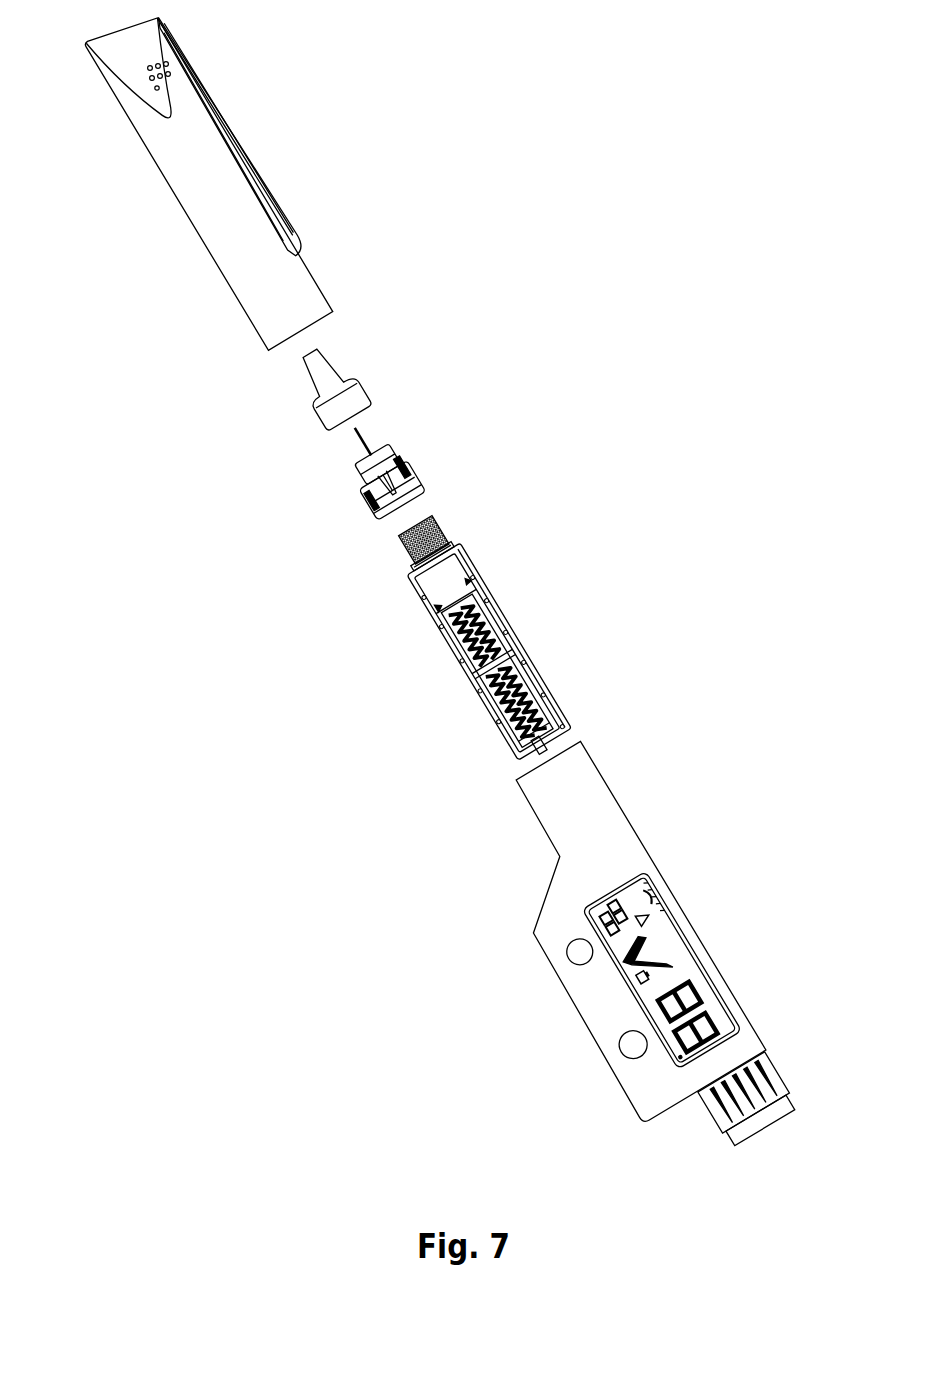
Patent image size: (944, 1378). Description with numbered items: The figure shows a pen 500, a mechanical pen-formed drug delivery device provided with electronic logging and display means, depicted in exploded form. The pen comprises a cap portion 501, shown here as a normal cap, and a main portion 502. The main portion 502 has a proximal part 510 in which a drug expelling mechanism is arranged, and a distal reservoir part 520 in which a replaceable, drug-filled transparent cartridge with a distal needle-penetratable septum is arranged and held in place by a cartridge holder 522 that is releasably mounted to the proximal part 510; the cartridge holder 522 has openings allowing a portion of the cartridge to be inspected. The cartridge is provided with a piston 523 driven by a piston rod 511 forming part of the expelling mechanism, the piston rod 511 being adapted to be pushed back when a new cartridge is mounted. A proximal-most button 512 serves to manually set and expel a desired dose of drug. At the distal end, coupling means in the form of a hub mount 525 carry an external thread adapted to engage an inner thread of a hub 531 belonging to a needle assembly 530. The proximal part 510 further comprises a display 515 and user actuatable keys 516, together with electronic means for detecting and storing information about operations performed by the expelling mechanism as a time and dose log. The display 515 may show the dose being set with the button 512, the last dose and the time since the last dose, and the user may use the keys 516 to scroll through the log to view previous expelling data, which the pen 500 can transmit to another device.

The pen 500 is at (683, 215).
The cap portion 501 is at (315, 178).
The main portion 502 is at (643, 670).
The proximal part 510 is at (707, 947).
The piston rod 511 is at (513, 727).
The proximal-most button 512 is at (712, 1122).
The display 515 is at (632, 998).
The user actuatable keys 516 is at (578, 952).
The distal reservoir part 520 is at (505, 607).
The cartridge holder 522 is at (468, 673).
The piston 523 is at (435, 617).
The hub mount 525 is at (398, 548).
The needle assembly 530 is at (415, 418).
The hub 531 is at (362, 497).